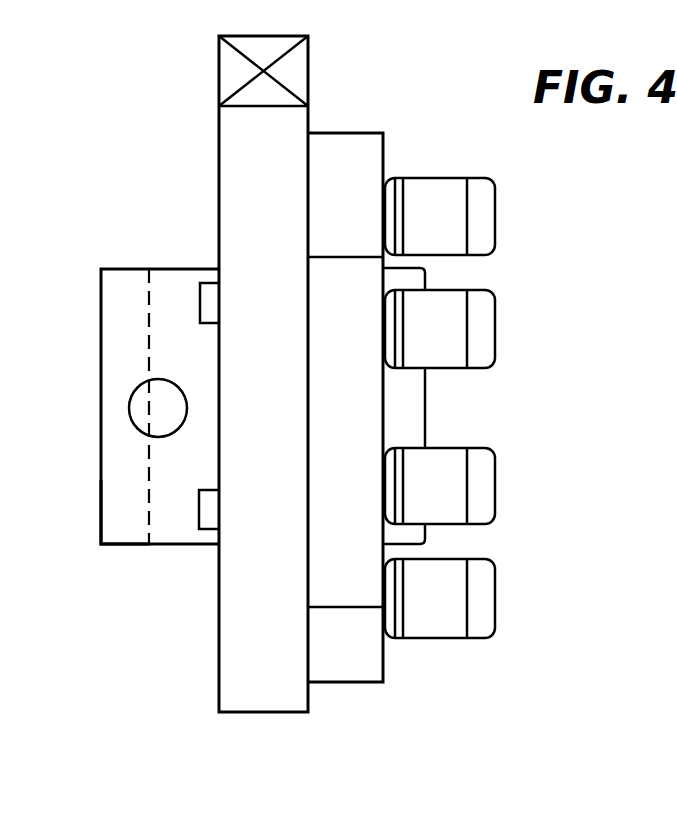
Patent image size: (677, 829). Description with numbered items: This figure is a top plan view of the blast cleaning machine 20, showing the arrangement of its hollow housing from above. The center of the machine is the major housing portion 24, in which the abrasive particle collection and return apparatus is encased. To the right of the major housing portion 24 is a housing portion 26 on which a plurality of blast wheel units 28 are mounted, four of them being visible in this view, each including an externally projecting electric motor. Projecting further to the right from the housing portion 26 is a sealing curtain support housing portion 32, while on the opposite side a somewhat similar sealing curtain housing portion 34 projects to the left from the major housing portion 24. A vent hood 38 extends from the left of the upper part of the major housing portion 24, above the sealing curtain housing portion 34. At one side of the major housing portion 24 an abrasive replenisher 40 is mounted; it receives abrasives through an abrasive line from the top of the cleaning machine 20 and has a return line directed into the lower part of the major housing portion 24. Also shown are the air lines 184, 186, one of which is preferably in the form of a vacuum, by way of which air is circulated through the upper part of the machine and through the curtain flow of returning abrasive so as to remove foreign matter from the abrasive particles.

The cleaning machine 20 is at (197, 621).
The major housing portion 24 is at (223, 688).
The housing portion 26 is at (362, 684).
The blast wheel units 28 is at (497, 323).
The sealing curtain support housing portion 32 is at (430, 424).
The sealing curtain housing portion 34 is at (172, 276).
The vent hood 38 is at (108, 530).
The abrasive replenisher 40 is at (301, 62).
The air line 184 is at (212, 318).
The air line 186 is at (98, 424).